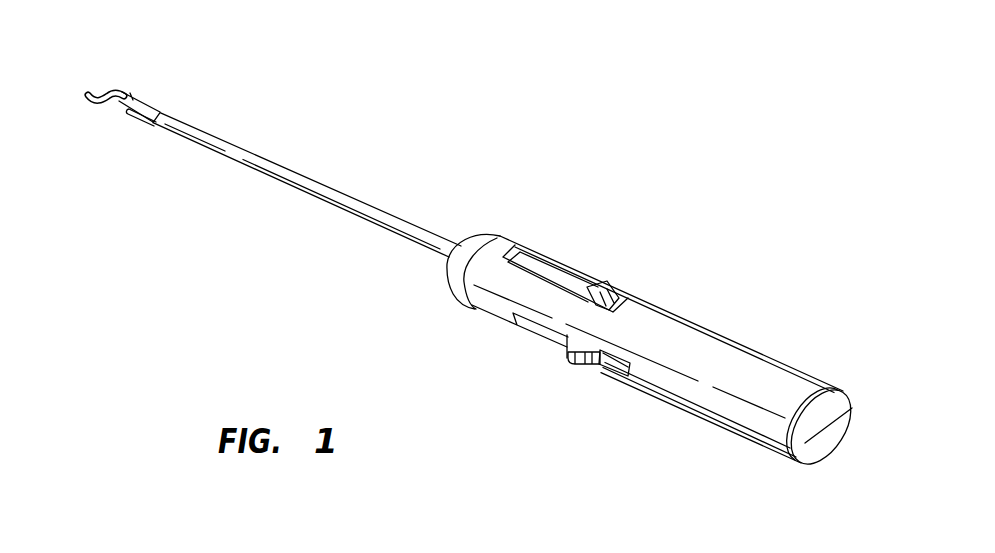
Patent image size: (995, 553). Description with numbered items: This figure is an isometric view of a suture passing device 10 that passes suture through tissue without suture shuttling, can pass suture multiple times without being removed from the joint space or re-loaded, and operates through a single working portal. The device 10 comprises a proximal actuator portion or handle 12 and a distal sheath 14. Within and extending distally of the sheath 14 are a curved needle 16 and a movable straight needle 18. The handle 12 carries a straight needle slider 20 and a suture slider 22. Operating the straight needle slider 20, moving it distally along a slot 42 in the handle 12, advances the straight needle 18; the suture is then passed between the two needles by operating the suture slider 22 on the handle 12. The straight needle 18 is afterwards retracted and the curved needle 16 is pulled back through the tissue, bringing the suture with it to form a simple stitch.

The suture passing device 10 is at (524, 186).
The handle 12 is at (746, 366).
The distal sheath 14 is at (302, 193).
The curved needle 16 is at (118, 90).
The movable straight needle 18 is at (137, 118).
The straight needle slider 20 is at (566, 362).
The suture slider 22 is at (605, 285).
The slot 42 is at (618, 373).